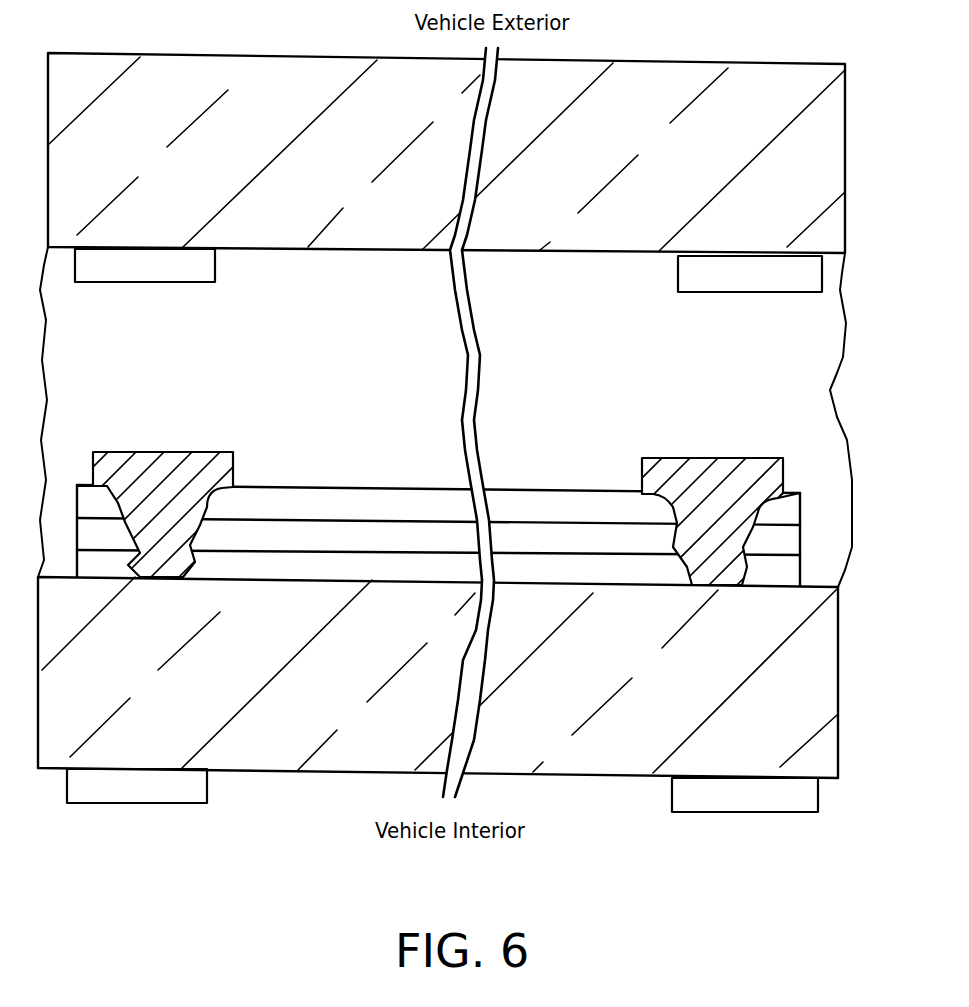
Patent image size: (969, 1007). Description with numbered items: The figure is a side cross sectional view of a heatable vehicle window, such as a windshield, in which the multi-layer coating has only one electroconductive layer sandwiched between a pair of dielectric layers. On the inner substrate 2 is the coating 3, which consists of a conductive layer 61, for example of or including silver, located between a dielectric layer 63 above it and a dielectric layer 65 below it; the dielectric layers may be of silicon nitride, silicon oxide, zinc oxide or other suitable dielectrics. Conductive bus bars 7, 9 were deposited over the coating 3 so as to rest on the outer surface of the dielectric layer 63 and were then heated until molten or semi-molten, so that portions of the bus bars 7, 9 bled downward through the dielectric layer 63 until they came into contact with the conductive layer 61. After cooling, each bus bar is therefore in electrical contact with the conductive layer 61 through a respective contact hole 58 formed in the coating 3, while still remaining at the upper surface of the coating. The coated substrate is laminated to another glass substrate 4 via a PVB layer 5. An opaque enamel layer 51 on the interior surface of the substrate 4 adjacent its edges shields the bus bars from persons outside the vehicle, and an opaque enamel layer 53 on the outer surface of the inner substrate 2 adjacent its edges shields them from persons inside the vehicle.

The inner substrate 2 is at (607, 750).
The coating 3 is at (813, 493).
The substrate 4 is at (663, 80).
The PVB layer 5 is at (800, 377).
The bus bar 7 is at (175, 473).
The bus bar 9 is at (650, 467).
The opaque enamel layer 51 is at (187, 283).
The opaque enamel layer 53 is at (182, 805).
The contact hole 58 is at (240, 490).
The conductive layer 61 is at (440, 540).
The dielectric layer 63 is at (393, 497).
The dielectric layer 65 is at (403, 582).